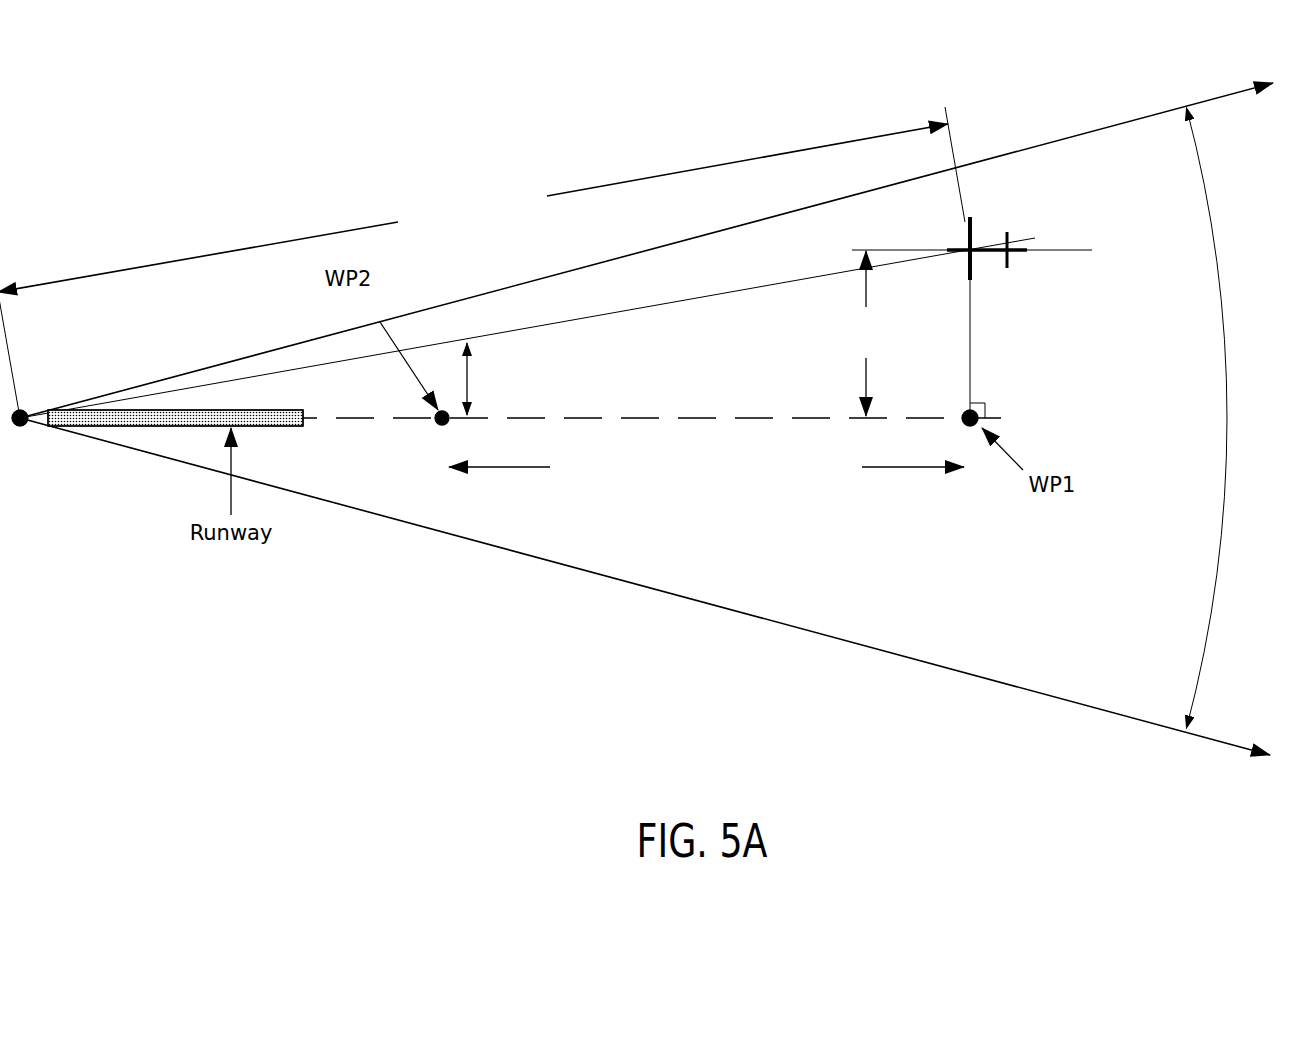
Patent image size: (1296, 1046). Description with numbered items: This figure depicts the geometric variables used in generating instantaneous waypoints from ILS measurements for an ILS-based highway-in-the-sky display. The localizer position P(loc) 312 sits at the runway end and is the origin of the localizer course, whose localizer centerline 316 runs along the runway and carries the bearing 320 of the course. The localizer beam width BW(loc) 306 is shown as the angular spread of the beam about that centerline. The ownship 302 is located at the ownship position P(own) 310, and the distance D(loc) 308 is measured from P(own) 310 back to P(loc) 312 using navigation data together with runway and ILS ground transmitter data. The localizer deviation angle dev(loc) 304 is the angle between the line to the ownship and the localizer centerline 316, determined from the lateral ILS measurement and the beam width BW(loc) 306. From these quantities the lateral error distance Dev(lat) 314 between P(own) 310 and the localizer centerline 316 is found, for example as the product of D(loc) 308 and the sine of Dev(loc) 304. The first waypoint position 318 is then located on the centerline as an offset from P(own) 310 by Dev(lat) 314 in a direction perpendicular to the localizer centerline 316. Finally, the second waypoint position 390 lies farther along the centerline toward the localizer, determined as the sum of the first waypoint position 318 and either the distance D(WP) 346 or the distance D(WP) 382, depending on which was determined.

The ownship 302 is at (991, 283).
The localizer deviation angle dev(loc) 304 is at (516, 379).
The localizer beam width BW(loc) 306 is at (1229, 418).
The distance D(loc) 308 is at (482, 199).
The ownship position P(own) 310 is at (997, 219).
The localizer position P(loc) 312 is at (29, 430).
The lateral error distance Dev(lat) 314 is at (946, 333).
The localizer centerline 316 is at (702, 416).
The position P(WP1) 318 is at (970, 428).
The bearing 320 is at (1022, 418).
The distance D(WP) 346 is at (582, 470).
The distance D(WP) 382 is at (852, 470).
The position P(WP2) 390 is at (443, 428).